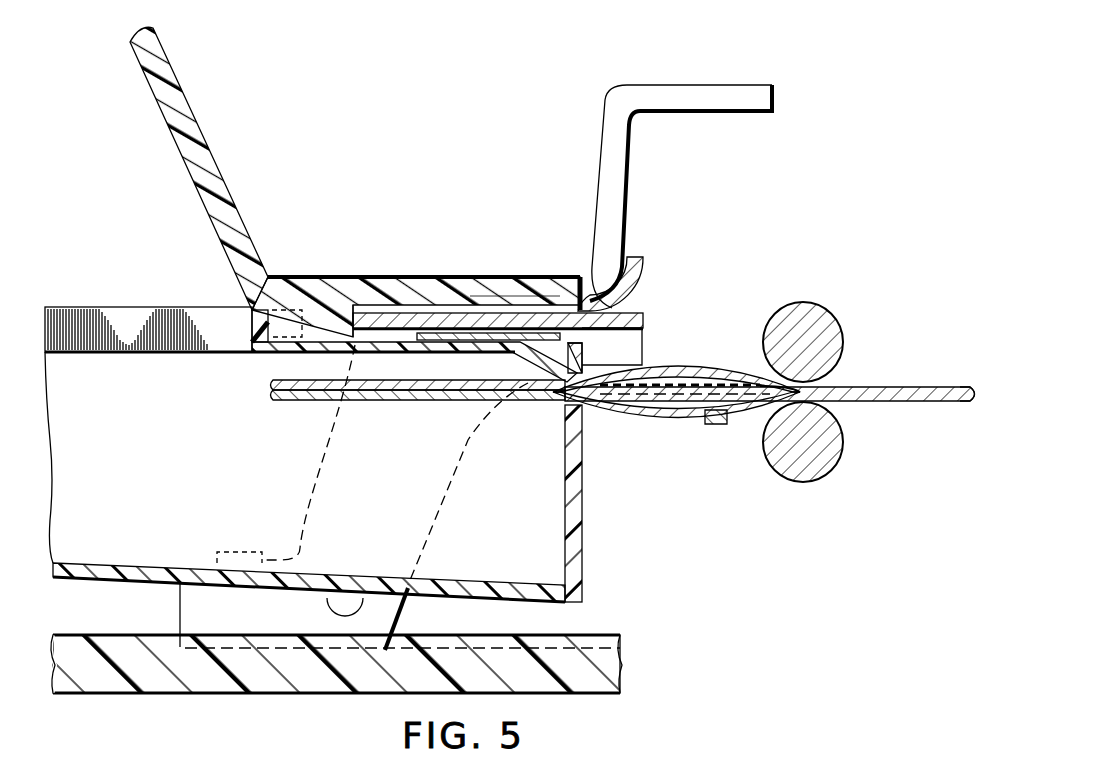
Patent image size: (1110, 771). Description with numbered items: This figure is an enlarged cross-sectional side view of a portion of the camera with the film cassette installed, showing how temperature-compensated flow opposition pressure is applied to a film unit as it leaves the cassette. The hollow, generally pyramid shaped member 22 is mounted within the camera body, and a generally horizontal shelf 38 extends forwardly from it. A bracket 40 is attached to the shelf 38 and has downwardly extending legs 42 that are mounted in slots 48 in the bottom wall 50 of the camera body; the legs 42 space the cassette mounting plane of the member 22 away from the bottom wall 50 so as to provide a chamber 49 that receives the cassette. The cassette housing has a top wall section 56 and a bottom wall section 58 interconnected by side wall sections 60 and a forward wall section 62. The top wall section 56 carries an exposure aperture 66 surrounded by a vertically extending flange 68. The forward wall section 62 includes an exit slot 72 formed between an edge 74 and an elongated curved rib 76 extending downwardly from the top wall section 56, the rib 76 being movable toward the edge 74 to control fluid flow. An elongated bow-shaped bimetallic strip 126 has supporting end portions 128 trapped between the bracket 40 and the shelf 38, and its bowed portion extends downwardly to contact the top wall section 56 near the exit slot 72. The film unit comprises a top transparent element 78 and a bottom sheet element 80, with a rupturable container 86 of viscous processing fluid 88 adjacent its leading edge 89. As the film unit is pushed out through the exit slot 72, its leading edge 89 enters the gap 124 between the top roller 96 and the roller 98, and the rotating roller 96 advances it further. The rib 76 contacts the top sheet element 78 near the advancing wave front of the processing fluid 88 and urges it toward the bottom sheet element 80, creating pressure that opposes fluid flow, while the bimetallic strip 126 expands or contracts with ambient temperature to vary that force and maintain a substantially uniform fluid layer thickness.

The hollow generally pyramid shaped member 22 is at (206, 126).
The shelf 38 is at (452, 282).
The supporting end portions 128 is at (519, 298).
The bracket 40 is at (644, 284).
The vertically extending flange 68 is at (185, 307).
The exposure aperture 66 is at (236, 346).
The side wall sections 60 is at (183, 487).
The edge 74 is at (566, 405).
The bimetallic strip 126 is at (585, 342).
The curved rib 76 is at (581, 372).
The top wall section 56 is at (420, 348).
The exit slot 72 is at (548, 370).
The top transparent element 78 is at (315, 383).
The bottom sheet element 80 is at (300, 400).
The rupturable container 86 is at (893, 386).
The leading edge 89 is at (975, 392).
The gap 124 is at (822, 381).
The processing fluid 88 is at (655, 408).
The top roller 96 is at (831, 331).
The roller 98 is at (837, 420).
The forward wall section 62 is at (583, 541).
The bottom wall section 58 is at (137, 581).
The legs 42 is at (404, 606).
The slots 48 is at (180, 633).
The chamber 49 is at (528, 627).
The bottom wall 50 is at (220, 690).